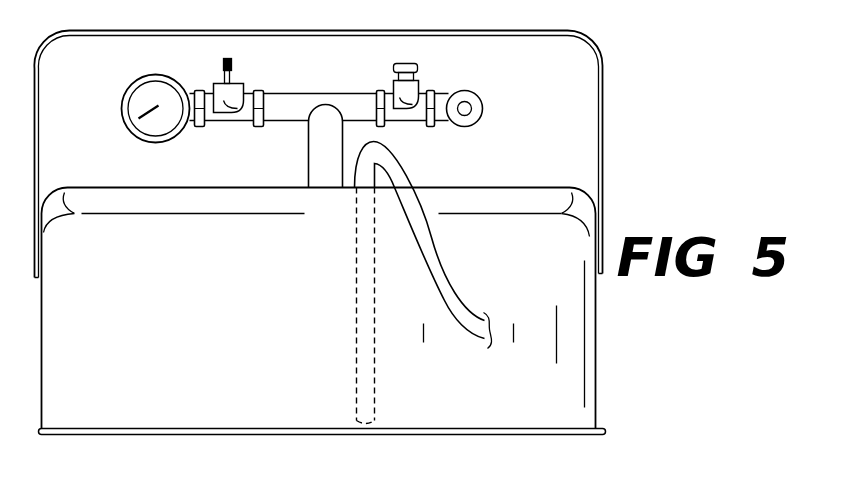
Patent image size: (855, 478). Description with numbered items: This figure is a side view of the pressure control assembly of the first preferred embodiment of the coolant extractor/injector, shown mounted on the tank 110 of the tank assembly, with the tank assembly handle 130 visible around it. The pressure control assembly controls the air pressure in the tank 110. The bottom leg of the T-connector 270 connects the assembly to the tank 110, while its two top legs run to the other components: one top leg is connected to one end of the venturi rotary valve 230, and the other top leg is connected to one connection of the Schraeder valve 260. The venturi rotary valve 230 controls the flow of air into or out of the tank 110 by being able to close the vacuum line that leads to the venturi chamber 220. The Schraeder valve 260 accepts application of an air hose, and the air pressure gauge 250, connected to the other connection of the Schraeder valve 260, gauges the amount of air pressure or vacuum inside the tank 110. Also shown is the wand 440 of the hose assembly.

The tank 110 is at (148, 276).
The tank assembly handle 130 is at (602, 95).
The venturi chamber 220 is at (482, 117).
The venturi rotary valve 230 is at (417, 86).
The air pressure gauge 250 is at (120, 108).
The Schraeder valve 260 is at (222, 82).
The T-connector 270 is at (307, 146).
The wand 440 is at (445, 282).